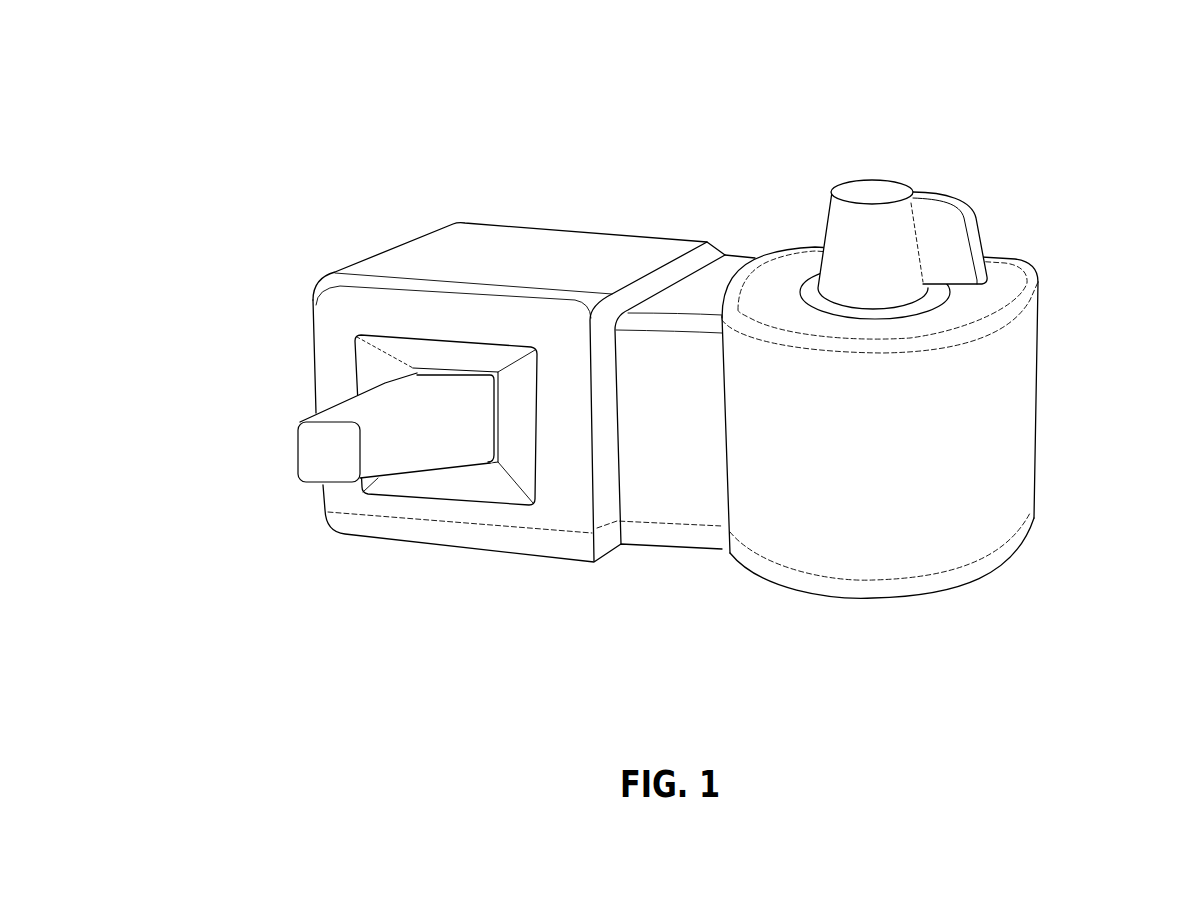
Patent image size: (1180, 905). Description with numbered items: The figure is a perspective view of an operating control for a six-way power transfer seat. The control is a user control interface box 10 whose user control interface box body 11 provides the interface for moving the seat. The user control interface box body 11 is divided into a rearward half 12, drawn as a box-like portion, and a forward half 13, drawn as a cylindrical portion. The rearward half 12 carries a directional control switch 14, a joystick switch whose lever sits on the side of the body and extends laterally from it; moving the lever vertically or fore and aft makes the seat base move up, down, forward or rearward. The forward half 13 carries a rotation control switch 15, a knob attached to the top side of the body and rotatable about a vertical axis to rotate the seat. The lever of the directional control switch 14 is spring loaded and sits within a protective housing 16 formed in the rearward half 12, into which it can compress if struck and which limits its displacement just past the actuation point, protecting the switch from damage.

The user control interface box 10 is at (333, 203).
The user control interface box body 11 is at (513, 243).
The rearward half 12 is at (320, 348).
The forward half 13 is at (987, 435).
The directional control switch 14 is at (320, 453).
The rotation control switch 15 is at (868, 188).
The protective housing 16 is at (473, 483).